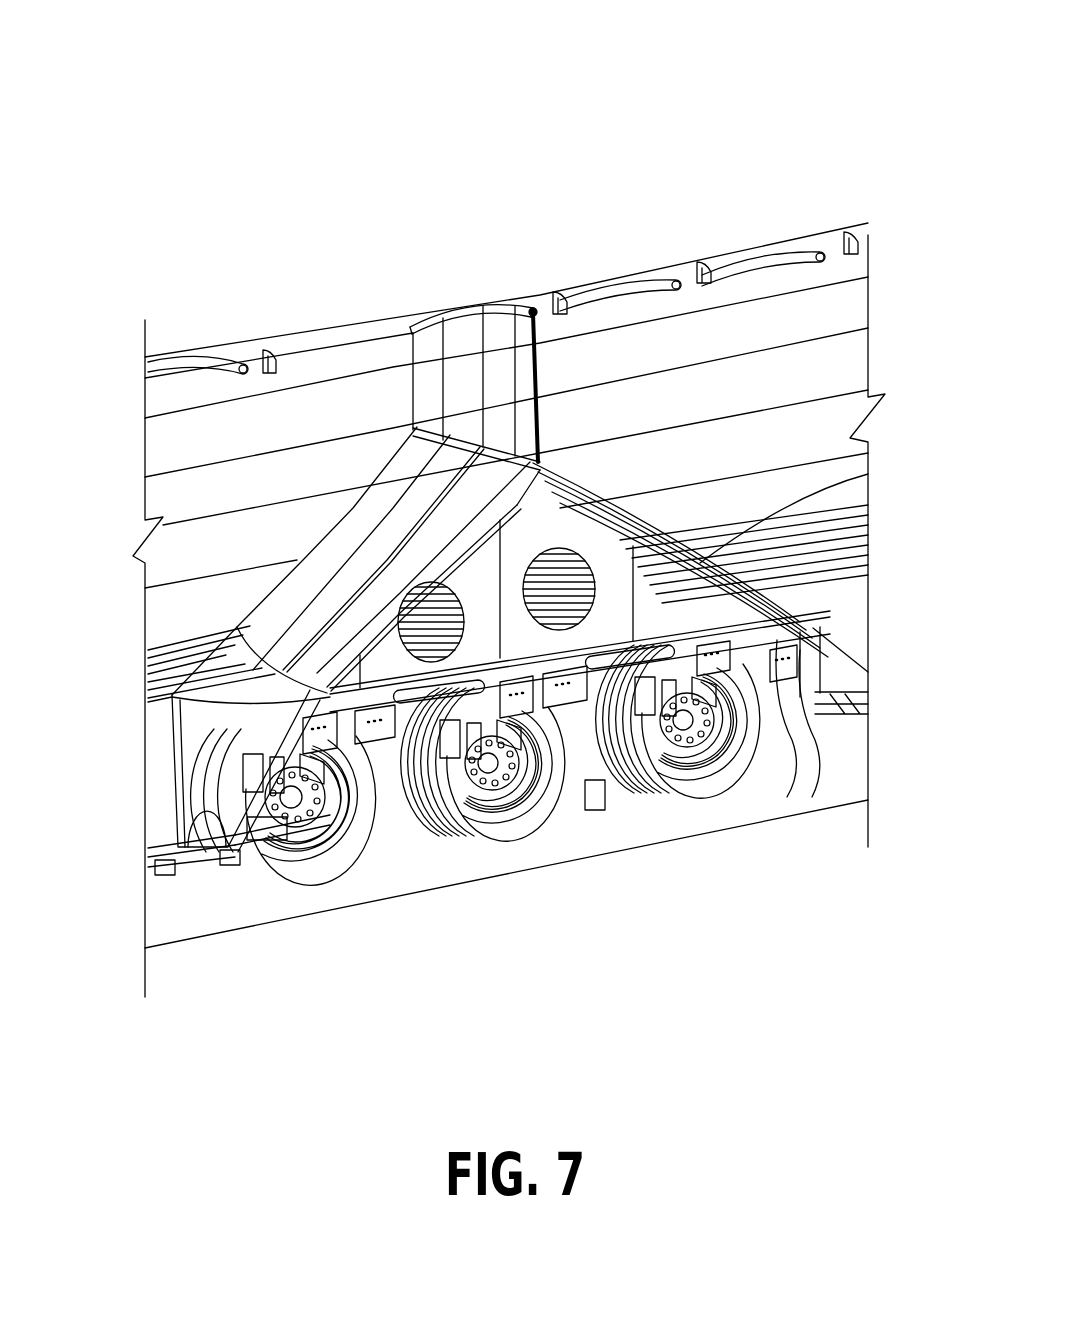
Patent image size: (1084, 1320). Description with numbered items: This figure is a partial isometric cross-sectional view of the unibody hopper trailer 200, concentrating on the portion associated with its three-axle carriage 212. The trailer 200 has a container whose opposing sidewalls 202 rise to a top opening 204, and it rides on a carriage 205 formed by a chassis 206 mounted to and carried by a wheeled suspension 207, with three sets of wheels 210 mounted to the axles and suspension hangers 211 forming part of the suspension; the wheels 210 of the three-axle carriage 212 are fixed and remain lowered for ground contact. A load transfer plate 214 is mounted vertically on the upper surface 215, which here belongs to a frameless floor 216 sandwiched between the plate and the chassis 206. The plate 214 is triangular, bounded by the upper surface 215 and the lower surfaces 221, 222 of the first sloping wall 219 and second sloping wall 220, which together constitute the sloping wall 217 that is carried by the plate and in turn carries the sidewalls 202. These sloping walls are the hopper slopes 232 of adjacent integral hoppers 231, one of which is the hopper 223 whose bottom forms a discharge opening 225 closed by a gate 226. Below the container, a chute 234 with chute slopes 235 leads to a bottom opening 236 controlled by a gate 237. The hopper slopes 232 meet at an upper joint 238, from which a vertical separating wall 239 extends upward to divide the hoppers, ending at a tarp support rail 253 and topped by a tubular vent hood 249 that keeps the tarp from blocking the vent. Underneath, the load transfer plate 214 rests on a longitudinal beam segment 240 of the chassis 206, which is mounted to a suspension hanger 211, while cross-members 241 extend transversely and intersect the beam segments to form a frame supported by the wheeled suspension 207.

The unibody hopper trailer 200 is at (188, 270).
The sidewall 202 is at (255, 363).
The top opening 204 is at (680, 240).
The carriage 205 is at (869, 830).
The chassis 206 is at (382, 735).
The wheeled suspension 207 is at (768, 778).
The wheels 210 is at (313, 868).
The suspension hanger 211 is at (458, 840).
The three-axle carriage 212 is at (862, 800).
The load transfer plate 214 is at (868, 474).
The upper surface 215 is at (868, 508).
The frameless floor 216 is at (868, 543).
The sloping wall 217 is at (504, 551).
The first sloping wall 219 is at (427, 503).
The second sloping wall 220 is at (607, 497).
The lower surface 221 is at (207, 614).
The lower surface 222 is at (640, 545).
The hopper 223 is at (560, 214).
The discharge opening 225 is at (170, 684).
The gate 226 is at (228, 970).
The integral hopper 231 is at (292, 305).
The hopper slope 232 is at (504, 551).
The chute 234 is at (163, 822).
The chute slope 235 is at (212, 777).
The bottom opening 236 is at (240, 857).
The gate 237 is at (207, 845).
The upper joint 238 is at (463, 363).
The vertical separating wall 239 is at (465, 450).
The longitudinal beam segment 240 is at (592, 810).
The cross-member 241 is at (770, 608).
The tubular vent hood 249 is at (485, 305).
The tarp support rail 253 is at (762, 246).